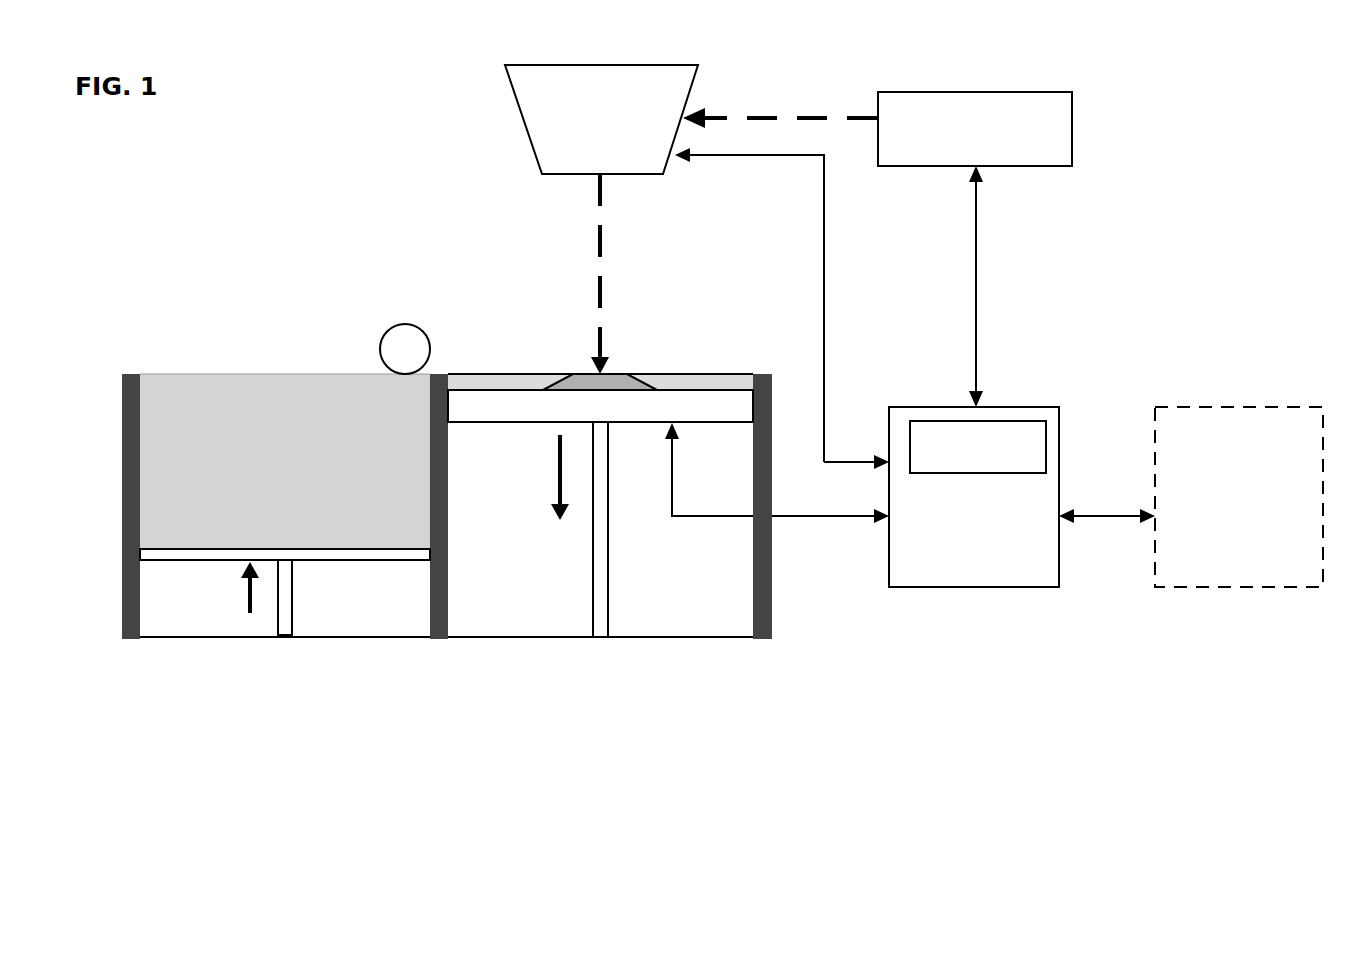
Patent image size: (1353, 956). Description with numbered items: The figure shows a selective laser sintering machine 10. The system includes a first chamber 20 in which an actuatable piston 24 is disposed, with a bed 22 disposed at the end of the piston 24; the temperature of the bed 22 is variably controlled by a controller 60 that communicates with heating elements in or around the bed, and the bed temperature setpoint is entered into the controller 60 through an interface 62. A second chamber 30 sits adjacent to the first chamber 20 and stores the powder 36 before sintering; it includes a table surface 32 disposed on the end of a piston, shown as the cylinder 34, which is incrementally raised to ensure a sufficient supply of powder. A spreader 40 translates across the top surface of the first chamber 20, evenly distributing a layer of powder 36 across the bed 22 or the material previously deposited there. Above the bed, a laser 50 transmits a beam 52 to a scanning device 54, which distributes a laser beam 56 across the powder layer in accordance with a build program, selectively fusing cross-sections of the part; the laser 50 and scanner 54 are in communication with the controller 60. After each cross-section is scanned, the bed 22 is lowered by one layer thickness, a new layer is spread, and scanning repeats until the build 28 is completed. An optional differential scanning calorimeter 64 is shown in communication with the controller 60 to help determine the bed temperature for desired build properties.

The SLS machine 10 is at (360, 116).
The first chamber 20 is at (518, 600).
The bed 22 is at (483, 407).
The actuatable piston 24 is at (608, 605).
The build 28 is at (572, 375).
The second chamber 30 is at (197, 617).
The table surface 32 is at (367, 553).
The cylinder 34 is at (297, 600).
The powder 36 is at (198, 385).
The spreader 40 is at (383, 330).
The laser 50 is at (1040, 92).
The beam 52 is at (752, 118).
The scanning device 54 is at (607, 65).
The laser beam 56 is at (602, 280).
The controller 60 is at (1020, 407).
The interface 62 is at (1022, 462).
The differential scanning calorimeter 64 is at (1218, 407).